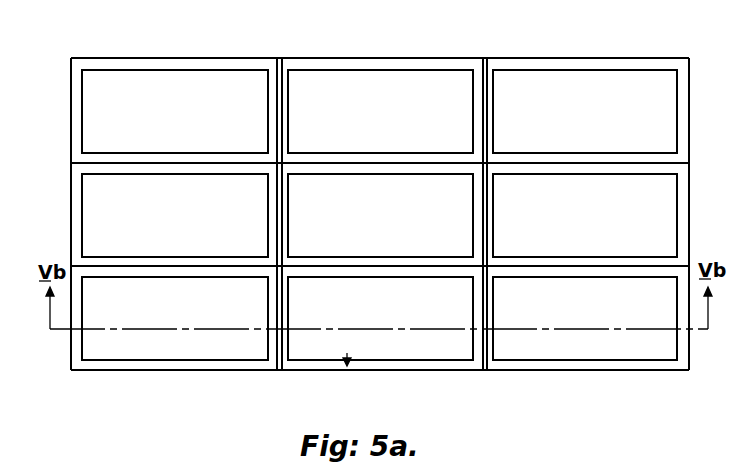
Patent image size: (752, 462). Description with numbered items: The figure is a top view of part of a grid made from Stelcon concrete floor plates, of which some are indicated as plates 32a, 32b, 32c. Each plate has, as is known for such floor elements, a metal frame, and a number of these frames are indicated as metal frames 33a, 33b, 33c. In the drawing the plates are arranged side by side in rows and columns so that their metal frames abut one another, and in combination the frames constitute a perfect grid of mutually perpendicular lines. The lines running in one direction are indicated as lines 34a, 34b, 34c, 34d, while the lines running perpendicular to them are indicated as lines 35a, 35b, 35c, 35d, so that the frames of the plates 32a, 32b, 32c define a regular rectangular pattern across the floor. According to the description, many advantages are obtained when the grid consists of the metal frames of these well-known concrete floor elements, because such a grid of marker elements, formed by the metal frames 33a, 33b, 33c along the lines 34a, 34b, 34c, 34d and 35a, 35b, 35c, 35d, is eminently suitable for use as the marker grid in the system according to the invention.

The plate 32a is at (220, 350).
The plate 32b is at (430, 350).
The plate 32c is at (550, 348).
The metal frame 33a is at (155, 370).
The metal frame 33b is at (377, 367).
The metal frame 33c is at (623, 365).
The line 34a is at (78, 368).
The line 34b is at (72, 252).
The line 34c is at (77, 161).
The line 34d is at (78, 64).
The line 35a is at (78, 116).
The line 35b is at (283, 95).
The line 35c is at (488, 87).
The line 35d is at (685, 90).